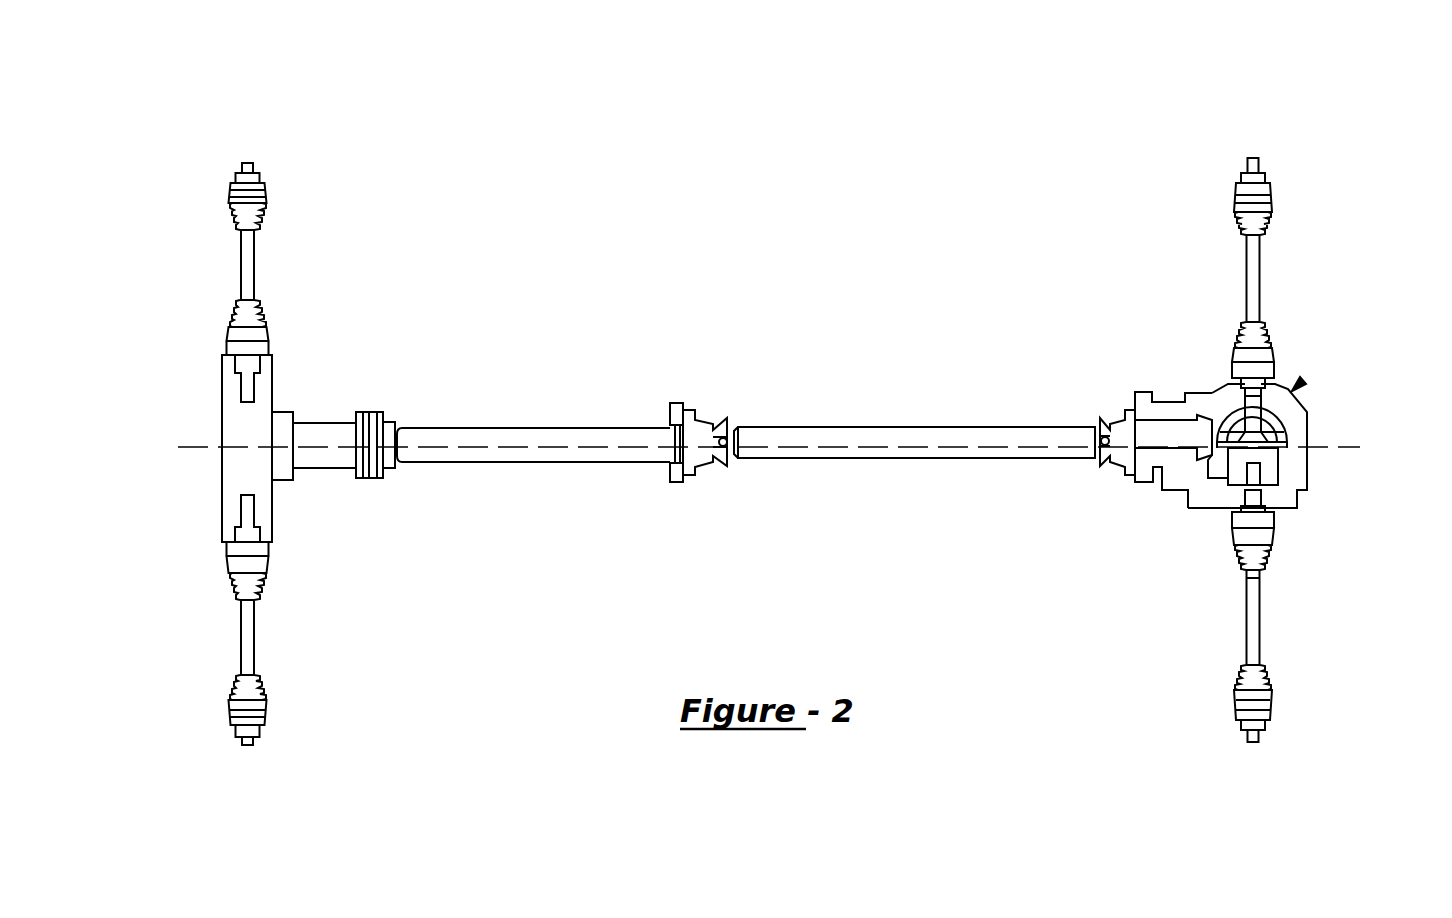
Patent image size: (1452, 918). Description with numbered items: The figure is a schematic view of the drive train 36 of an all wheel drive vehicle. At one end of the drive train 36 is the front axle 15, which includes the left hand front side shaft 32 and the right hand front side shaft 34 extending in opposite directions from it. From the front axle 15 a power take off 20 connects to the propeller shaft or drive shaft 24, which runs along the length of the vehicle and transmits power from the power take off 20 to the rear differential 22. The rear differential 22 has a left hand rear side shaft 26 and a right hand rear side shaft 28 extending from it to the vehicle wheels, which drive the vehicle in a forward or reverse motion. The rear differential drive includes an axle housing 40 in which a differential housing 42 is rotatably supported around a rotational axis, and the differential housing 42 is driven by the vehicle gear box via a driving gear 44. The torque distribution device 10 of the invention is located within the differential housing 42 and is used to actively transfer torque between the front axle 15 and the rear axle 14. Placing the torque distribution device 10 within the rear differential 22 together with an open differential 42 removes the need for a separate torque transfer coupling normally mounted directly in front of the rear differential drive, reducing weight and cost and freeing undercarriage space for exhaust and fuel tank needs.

The torque distribution device 10 is at (1267, 463).
The rear axle 14 is at (1270, 523).
The front axle 15 is at (222, 510).
The power take off 20 is at (318, 408).
The rear differential 22 is at (1298, 385).
The propeller shaft 24 is at (849, 426).
The left hand rear side shaft 26 is at (1255, 282).
The right hand rear side shaft 28 is at (1258, 625).
The left hand front side shaft 32 is at (255, 265).
The right hand front side shaft 34 is at (255, 638).
The drive train 36 is at (600, 183).
The axle housing 40 is at (1188, 498).
The differential housing 42 is at (1305, 418).
The driving gear 44 is at (1200, 393).